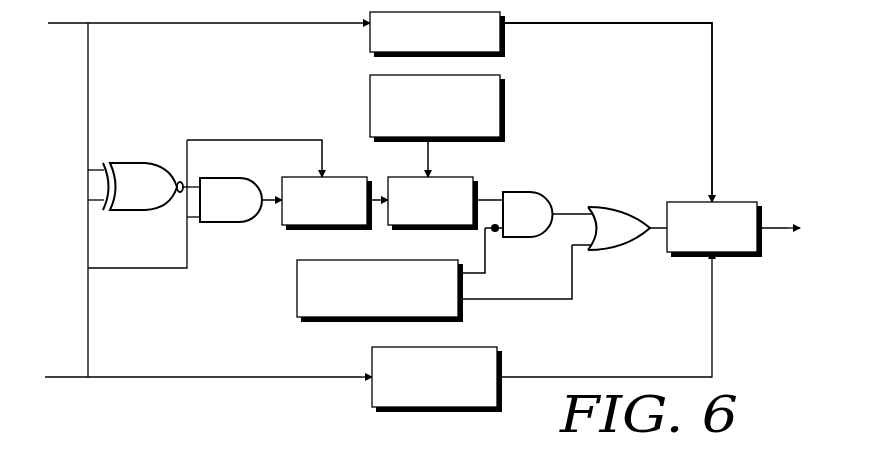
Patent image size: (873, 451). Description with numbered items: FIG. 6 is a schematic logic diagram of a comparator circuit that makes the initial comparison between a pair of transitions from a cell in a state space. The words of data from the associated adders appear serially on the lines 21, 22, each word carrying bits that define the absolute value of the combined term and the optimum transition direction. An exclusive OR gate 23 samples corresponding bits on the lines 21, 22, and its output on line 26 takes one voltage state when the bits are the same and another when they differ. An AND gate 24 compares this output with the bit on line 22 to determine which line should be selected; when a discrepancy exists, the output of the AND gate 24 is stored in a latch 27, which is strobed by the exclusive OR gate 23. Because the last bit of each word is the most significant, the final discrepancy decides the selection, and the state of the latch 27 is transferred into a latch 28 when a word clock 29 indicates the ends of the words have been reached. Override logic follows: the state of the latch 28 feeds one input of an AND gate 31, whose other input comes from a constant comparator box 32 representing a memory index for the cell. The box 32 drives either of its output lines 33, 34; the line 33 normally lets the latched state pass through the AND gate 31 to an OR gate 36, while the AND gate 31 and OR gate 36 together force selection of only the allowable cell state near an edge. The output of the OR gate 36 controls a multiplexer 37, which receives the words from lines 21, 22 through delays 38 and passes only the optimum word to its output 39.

The line 21 is at (68, 20).
The line 22 is at (64, 379).
The exclusive OR gate 23 is at (134, 172).
The AND gate 24 is at (240, 222).
The line 26 is at (180, 198).
The latch 27 is at (320, 226).
The latch 28 is at (420, 226).
The word clock 29 is at (378, 105).
The AND gate 31 is at (525, 192).
The constant comparator box 32 is at (298, 292).
The output line 33 is at (487, 251).
The output line 34 is at (574, 275).
The OR gate 36 is at (612, 214).
The multiplexer 37 is at (688, 204).
The delays 38 is at (482, 43).
The output 39 is at (774, 224).